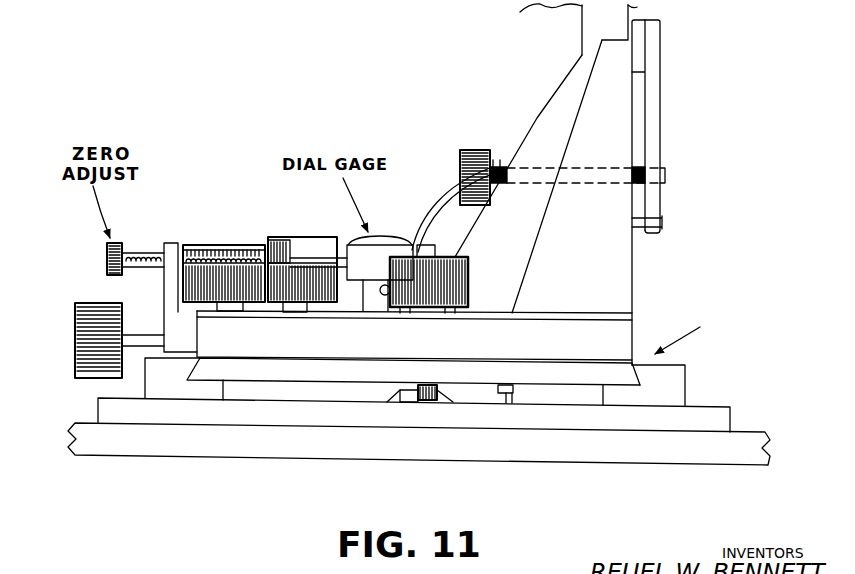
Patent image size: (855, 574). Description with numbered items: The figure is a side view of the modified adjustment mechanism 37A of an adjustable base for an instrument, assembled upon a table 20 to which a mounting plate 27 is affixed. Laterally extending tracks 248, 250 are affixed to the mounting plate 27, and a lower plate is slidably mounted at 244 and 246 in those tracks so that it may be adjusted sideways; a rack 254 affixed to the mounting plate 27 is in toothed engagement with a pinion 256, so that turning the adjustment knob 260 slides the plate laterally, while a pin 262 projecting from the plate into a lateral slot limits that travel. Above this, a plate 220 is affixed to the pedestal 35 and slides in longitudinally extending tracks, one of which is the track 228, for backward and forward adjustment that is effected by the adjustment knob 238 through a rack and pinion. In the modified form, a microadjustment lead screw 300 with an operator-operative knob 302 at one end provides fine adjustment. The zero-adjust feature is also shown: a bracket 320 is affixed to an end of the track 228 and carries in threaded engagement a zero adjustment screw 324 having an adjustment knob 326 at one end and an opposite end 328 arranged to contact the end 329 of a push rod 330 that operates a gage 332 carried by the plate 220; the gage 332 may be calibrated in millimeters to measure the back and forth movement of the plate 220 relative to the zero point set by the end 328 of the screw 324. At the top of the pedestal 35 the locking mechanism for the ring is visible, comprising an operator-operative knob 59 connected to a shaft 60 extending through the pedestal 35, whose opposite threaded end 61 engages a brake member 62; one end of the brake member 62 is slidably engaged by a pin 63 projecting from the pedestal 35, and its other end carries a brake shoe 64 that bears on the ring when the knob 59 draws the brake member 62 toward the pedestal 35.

The table 20 is at (601, 455).
The mounting plate 27 is at (723, 420).
The pedestal 35 is at (597, 224).
The adjustment mechanism 37A is at (469, 326).
The operator-operative knob 59 is at (468, 150).
The shaft 60 is at (493, 166).
The opposite end of shaft 61 is at (638, 166).
The brake member 62 is at (655, 97).
The pin 63 is at (663, 222).
The brake shoe 64 is at (640, 53).
The plate 220 is at (540, 312).
The track 228 is at (623, 333).
The adjustment knob 238 is at (243, 292).
The slidable mounting 244 is at (190, 369).
The slidable mounting 246 is at (630, 373).
The track 248 is at (173, 390).
The track 250 is at (679, 392).
The rack 254 is at (394, 402).
The pinion 256 is at (447, 401).
The adjustment knob 260 is at (465, 278).
The pin 262 is at (514, 404).
The microadjustment lead screw 300 is at (142, 335).
The operator-operative knob 302 is at (74, 362).
The bracket 320 is at (167, 275).
The zero adjustment screw 324 is at (145, 252).
The adjustment knob 326 is at (107, 260).
The end of zero adjustment screw 328 is at (258, 250).
The end of push rod 329 is at (281, 262).
The push rod 330 is at (308, 242).
The gage 332 is at (407, 244).